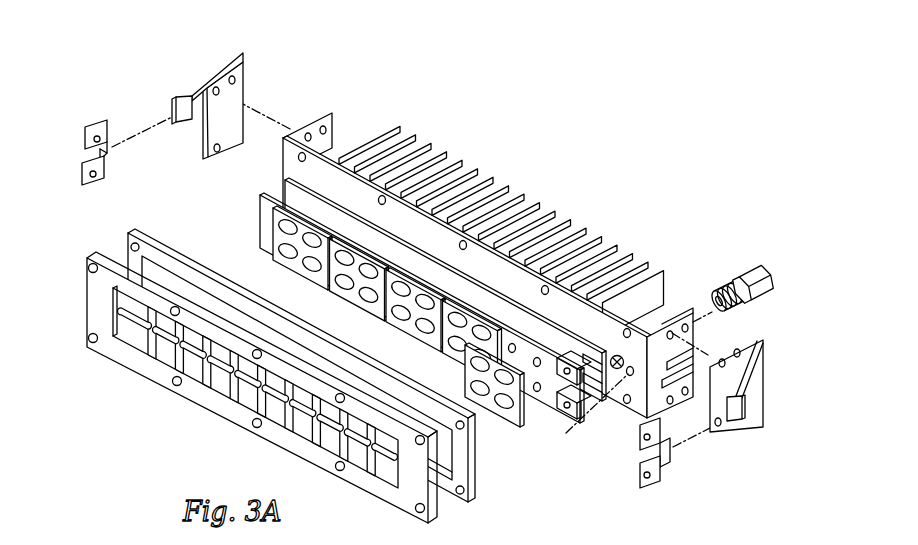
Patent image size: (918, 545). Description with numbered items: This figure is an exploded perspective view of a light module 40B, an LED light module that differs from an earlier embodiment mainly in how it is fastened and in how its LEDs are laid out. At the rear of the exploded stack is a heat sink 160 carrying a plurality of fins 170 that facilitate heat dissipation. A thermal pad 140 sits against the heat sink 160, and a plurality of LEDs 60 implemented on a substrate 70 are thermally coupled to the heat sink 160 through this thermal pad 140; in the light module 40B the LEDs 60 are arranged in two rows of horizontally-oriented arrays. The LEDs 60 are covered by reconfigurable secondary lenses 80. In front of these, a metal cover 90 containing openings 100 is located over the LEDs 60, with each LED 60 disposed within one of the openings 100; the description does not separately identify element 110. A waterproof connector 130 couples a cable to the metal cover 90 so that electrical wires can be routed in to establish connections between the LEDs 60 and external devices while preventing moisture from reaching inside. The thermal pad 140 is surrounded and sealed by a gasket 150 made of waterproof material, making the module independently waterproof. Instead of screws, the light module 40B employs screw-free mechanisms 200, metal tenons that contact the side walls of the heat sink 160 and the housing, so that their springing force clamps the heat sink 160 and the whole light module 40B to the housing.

The light module 40B is at (424, 274).
The LED 60 is at (546, 383).
The substrate 70 is at (262, 228).
The reconfigurable secondary lenses 80 is at (370, 296).
The metal cover 90 is at (378, 490).
The openings 100 is at (138, 339).
The louver vanes 110 is at (300, 437).
The waterproof connector 130 is at (745, 272).
The thermal pad 140 is at (291, 192).
The gasket 150 is at (173, 266).
The heat sink 160 is at (313, 124).
The fins 170 is at (602, 232).
The screw-free mechanism 200 is at (226, 66).